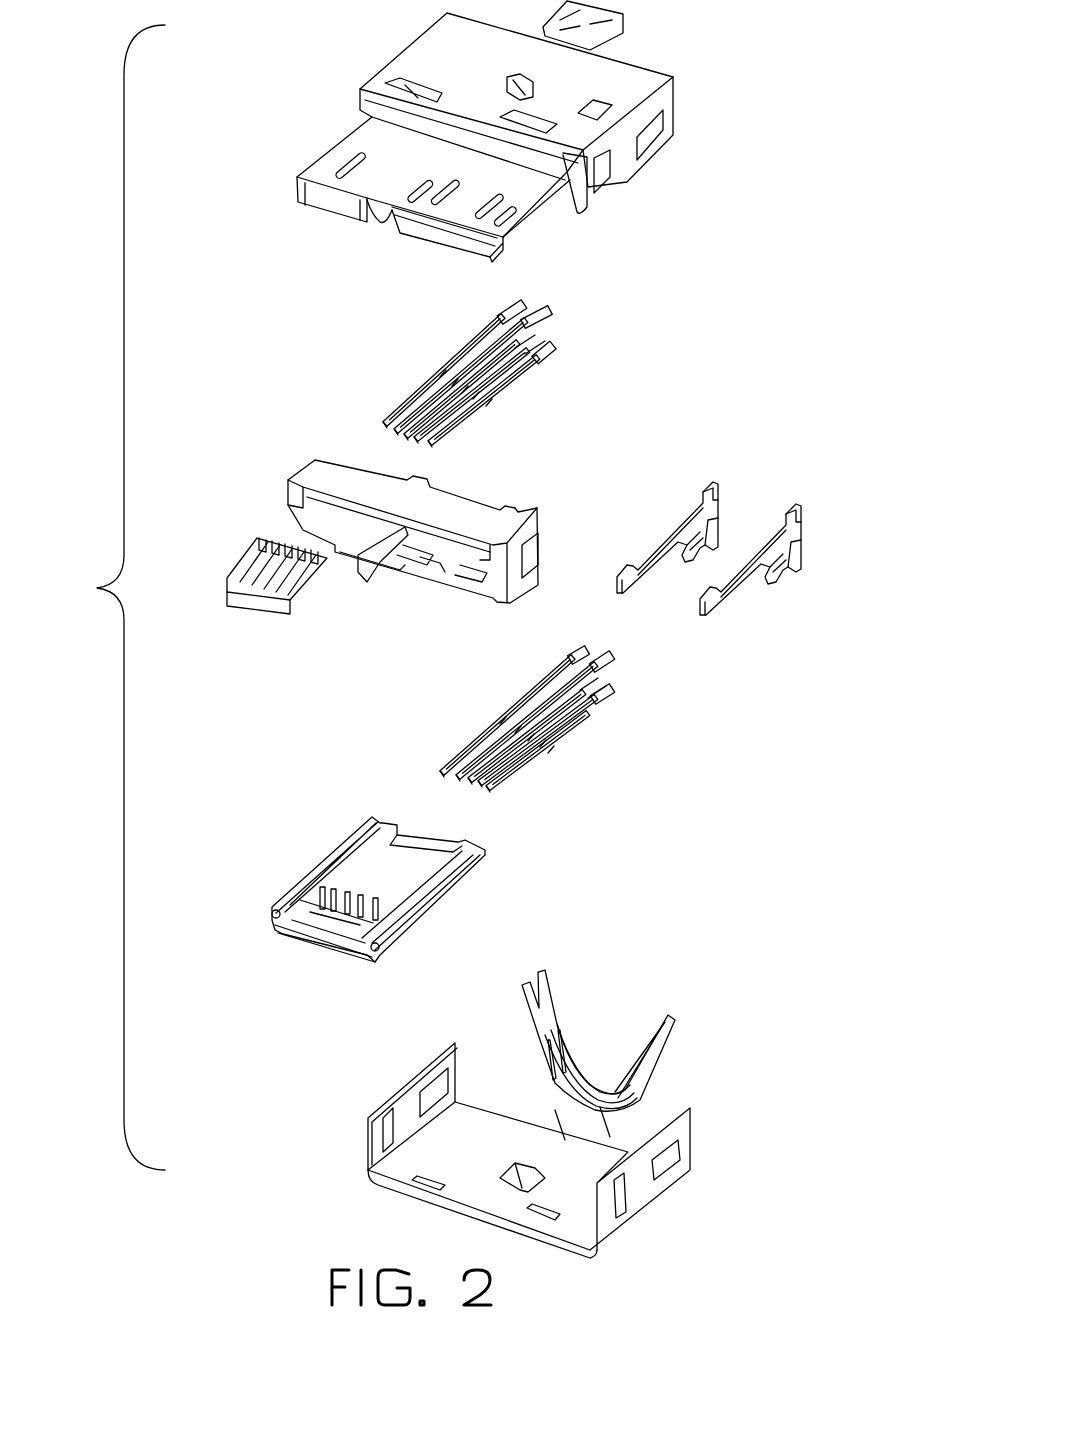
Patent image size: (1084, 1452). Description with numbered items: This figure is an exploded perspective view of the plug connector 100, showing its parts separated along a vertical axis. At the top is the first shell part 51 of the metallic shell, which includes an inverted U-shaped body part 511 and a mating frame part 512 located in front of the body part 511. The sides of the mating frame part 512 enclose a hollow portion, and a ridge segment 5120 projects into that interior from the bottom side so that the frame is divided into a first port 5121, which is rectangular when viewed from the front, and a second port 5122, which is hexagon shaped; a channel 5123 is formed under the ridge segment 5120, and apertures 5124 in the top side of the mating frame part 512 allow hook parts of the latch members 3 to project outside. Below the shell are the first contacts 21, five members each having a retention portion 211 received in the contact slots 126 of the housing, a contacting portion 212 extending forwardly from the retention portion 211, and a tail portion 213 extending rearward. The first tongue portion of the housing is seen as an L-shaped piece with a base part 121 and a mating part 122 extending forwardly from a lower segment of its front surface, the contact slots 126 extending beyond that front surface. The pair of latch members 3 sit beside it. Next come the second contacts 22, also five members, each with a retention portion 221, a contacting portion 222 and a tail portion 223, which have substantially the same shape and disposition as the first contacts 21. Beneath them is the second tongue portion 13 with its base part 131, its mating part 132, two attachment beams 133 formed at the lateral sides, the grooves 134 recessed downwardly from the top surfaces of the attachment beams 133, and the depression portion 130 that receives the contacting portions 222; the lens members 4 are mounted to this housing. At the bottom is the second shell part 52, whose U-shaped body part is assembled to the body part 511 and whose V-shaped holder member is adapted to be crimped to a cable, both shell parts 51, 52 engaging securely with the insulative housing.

The plug connector 100 is at (97, 588).
The first shell part 51 is at (437, 159).
The inverted U-shaped body part 511 is at (432, 48).
The mating frame part 512 is at (410, 203).
The ridge segment 5120 is at (340, 177).
The first port 5121 is at (333, 200).
The second port 5122 is at (437, 230).
The channel 5123 is at (380, 220).
The apertures 5124 is at (507, 213).
The first contacts 21 is at (471, 388).
The retention portion 211 is at (493, 387).
The contacting portion 212 is at (458, 422).
The tail portion 213 is at (530, 355).
The base part 121 is at (341, 552).
The mating part 122 is at (240, 588).
The contact slots 126 is at (323, 575).
The latch members 3 is at (650, 520).
The second contacts 22 is at (547, 725).
The retention portion 221 is at (560, 725).
The contacting portion 222 is at (515, 760).
The tail portion 223 is at (607, 698).
The second tongue portion 13 is at (378, 901).
The depression portion 130 is at (330, 930).
The base part 131 is at (410, 870).
The mating part 132 is at (333, 948).
The attachment beams 133 is at (400, 930).
The grooves 134 is at (335, 868).
The lens members 4 is at (275, 913).
The second shell part 52 is at (385, 1080).